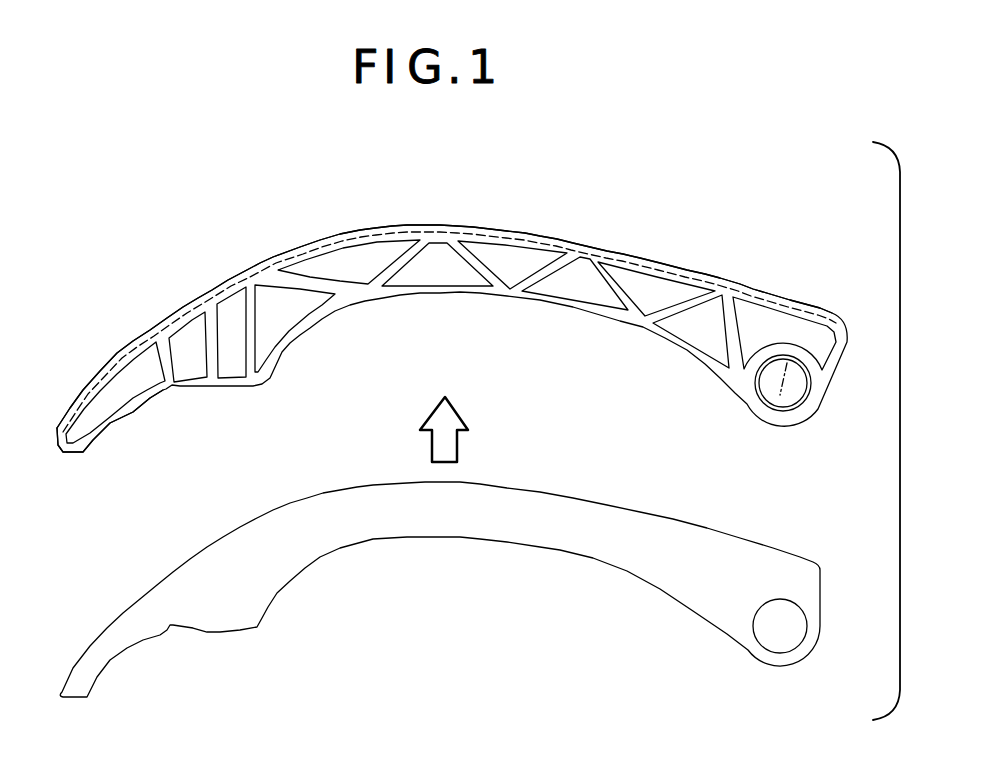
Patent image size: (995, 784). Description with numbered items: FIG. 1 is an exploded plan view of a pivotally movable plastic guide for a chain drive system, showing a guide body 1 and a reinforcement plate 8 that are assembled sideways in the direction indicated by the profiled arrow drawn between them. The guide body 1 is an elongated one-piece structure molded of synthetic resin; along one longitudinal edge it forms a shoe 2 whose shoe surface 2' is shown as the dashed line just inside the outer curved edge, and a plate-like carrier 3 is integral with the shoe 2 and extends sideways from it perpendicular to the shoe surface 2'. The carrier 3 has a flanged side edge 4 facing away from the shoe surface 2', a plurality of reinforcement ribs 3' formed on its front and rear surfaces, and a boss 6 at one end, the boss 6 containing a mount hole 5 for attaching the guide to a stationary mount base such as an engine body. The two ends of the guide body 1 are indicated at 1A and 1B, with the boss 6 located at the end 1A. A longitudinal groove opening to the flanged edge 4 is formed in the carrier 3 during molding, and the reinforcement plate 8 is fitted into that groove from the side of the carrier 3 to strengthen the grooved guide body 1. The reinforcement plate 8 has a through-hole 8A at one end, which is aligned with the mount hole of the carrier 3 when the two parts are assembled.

The guide body 1 is at (505, 217).
The pivot end portion of guide arm 1A is at (722, 399).
The free end portion of guide arm 1B is at (226, 396).
The shoe 2 is at (444, 303).
The shoe surface 2' is at (449, 323).
The carrier 3 is at (737, 341).
The reinforcement ribs 3' is at (575, 312).
The flanged side edge 4 is at (310, 320).
The mount hole 5 is at (772, 398).
The boss 6 is at (813, 400).
The reinforcement plate 8 is at (522, 530).
The through-hole 8A is at (773, 640).